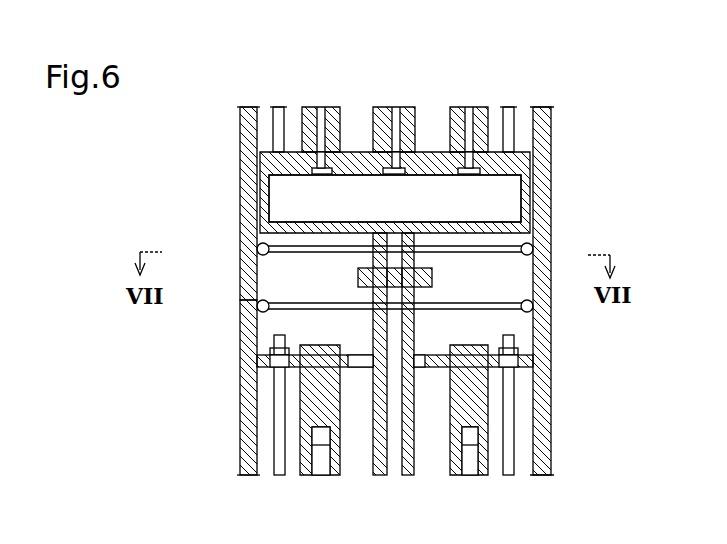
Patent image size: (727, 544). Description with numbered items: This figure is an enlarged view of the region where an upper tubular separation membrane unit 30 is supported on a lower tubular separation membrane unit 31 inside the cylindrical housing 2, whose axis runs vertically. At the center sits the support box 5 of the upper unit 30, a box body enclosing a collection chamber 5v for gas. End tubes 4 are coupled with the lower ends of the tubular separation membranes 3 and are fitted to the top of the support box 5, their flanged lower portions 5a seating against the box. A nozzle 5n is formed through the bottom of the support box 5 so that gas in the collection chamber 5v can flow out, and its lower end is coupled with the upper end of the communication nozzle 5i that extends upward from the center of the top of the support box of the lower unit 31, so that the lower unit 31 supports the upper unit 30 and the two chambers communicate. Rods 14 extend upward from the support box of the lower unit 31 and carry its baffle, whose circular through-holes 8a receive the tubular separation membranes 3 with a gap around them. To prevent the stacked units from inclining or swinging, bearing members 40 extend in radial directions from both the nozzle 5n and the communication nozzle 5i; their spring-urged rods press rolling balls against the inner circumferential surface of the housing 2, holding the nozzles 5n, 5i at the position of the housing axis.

The housing 2 is at (552, 175).
The tubular separation membranes 3 is at (341, 462).
The end tubes 4 is at (341, 130).
The support box 5 is at (487, 176).
The flange portion 5a is at (359, 176).
The communication nozzle 5i is at (415, 322).
The nozzle 5n is at (432, 275).
The collection chamber 5v is at (286, 199).
The through-holes 8a is at (350, 368).
The rods 14 is at (284, 127).
The tubular separation membrane unit 30 is at (266, 133).
The tubular separation membrane unit 31 is at (266, 425).
The bearing members 40 is at (297, 302).